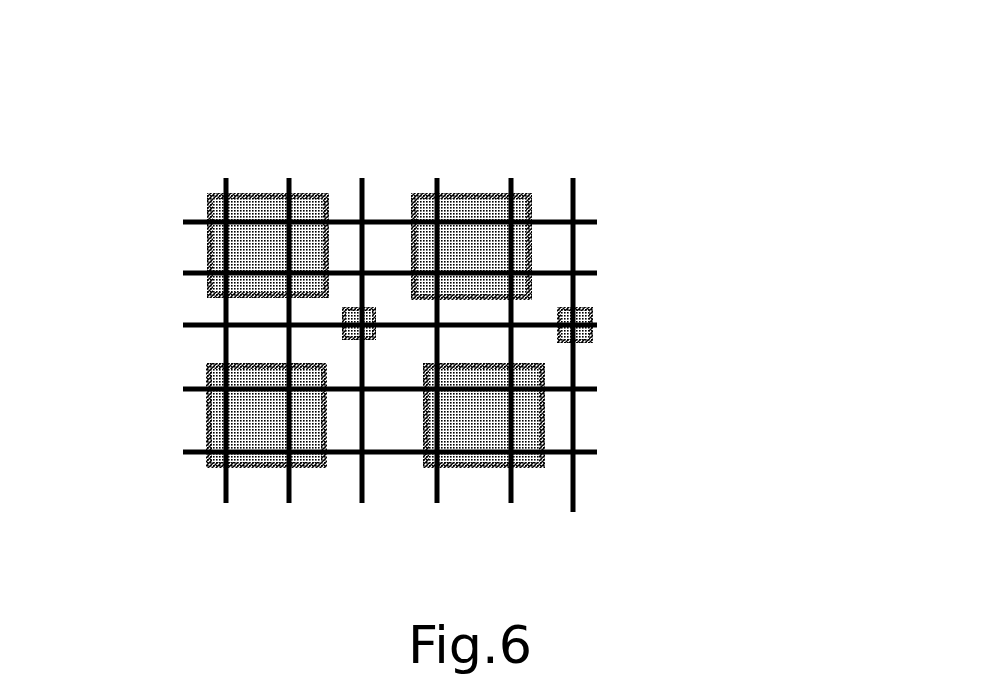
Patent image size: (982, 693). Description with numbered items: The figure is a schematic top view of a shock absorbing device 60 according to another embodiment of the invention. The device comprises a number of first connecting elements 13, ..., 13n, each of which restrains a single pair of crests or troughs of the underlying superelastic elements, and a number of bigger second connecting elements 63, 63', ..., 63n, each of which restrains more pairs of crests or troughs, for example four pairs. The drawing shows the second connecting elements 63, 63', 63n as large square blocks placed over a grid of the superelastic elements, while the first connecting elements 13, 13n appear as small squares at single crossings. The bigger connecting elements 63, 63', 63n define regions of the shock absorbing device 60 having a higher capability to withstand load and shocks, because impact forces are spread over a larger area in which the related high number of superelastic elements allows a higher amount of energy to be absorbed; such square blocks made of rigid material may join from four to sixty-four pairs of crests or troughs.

The shock absorbing device 60 is at (706, 240).
The second connecting element 63 is at (192, 415).
The second connecting element 63' is at (193, 253).
The second connecting element 63n is at (478, 232).
The first connecting element 13 is at (378, 313).
The first connecting element 13n is at (592, 329).